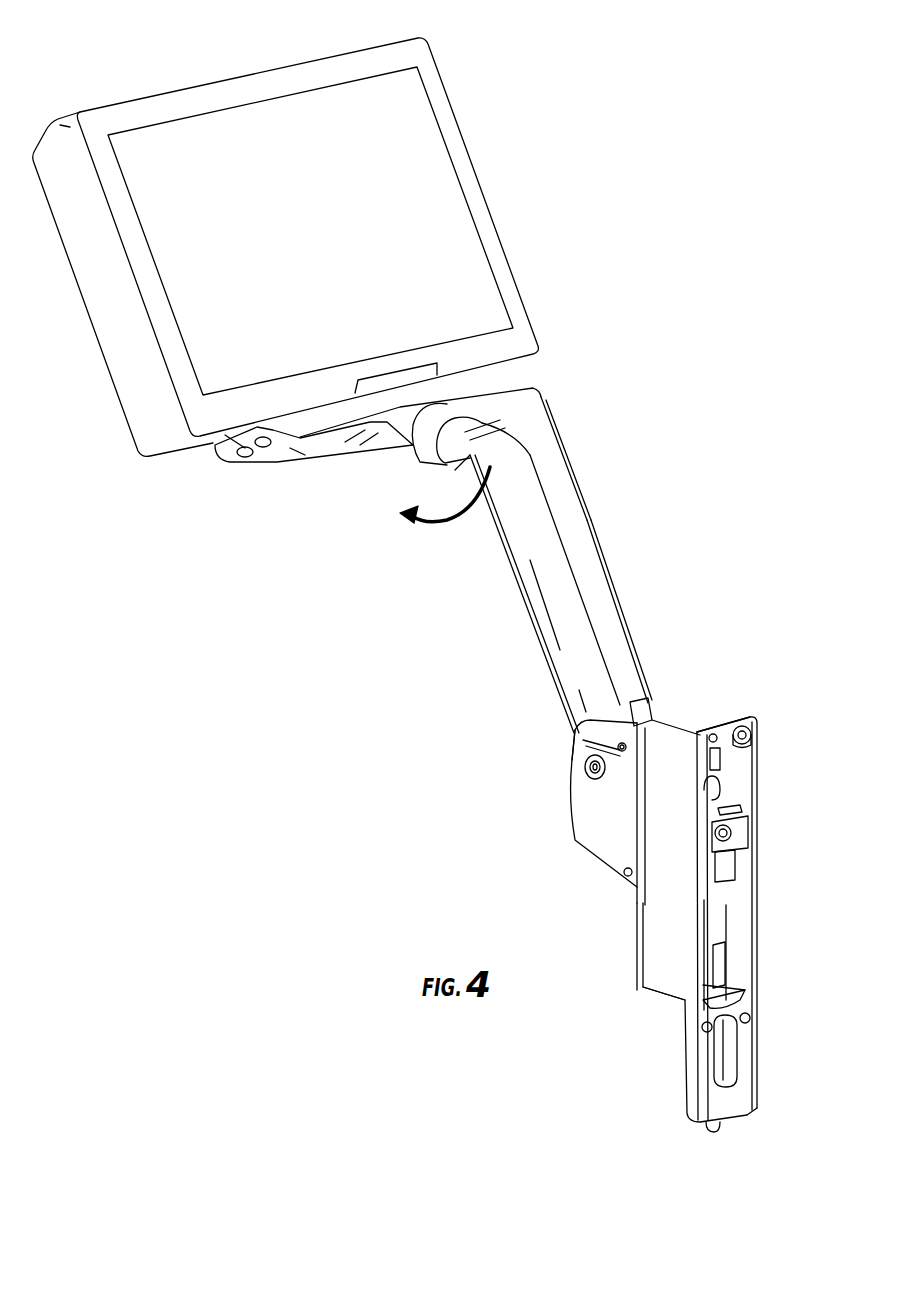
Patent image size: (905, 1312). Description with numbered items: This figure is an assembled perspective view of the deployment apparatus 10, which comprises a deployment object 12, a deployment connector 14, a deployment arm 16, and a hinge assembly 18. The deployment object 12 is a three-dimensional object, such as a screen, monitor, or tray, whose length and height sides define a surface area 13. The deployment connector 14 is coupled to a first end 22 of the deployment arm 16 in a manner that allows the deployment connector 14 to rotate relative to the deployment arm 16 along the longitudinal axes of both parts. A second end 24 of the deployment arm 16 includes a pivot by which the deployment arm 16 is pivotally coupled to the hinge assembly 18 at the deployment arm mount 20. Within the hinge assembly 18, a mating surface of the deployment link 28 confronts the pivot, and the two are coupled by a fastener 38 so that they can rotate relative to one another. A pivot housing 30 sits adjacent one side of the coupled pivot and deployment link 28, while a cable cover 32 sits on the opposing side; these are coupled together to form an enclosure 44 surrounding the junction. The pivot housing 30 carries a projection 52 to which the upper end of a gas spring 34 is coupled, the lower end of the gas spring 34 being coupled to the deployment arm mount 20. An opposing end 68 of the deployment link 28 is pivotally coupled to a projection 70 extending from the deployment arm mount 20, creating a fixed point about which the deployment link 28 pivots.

The deployment apparatus 10 is at (688, 190).
The deployment object 12 is at (143, 97).
The surface area 13 is at (322, 117).
The deployment connector 14 is at (515, 426).
The deployment arm 16 is at (592, 575).
The hinge assembly 18 is at (772, 663).
The deployment arm mount 20 is at (753, 940).
The first end 22 is at (515, 537).
The second end 24 is at (563, 708).
The deployment link 28 is at (728, 823).
The pivot housing 30 is at (685, 723).
The cable cover 32 is at (588, 802).
The gas spring 34 is at (703, 985).
The fastener 38 is at (587, 768).
The enclosure 44 is at (570, 755).
The projection 52 is at (713, 780).
The opposing end 68 is at (717, 832).
The projection 70 is at (728, 842).